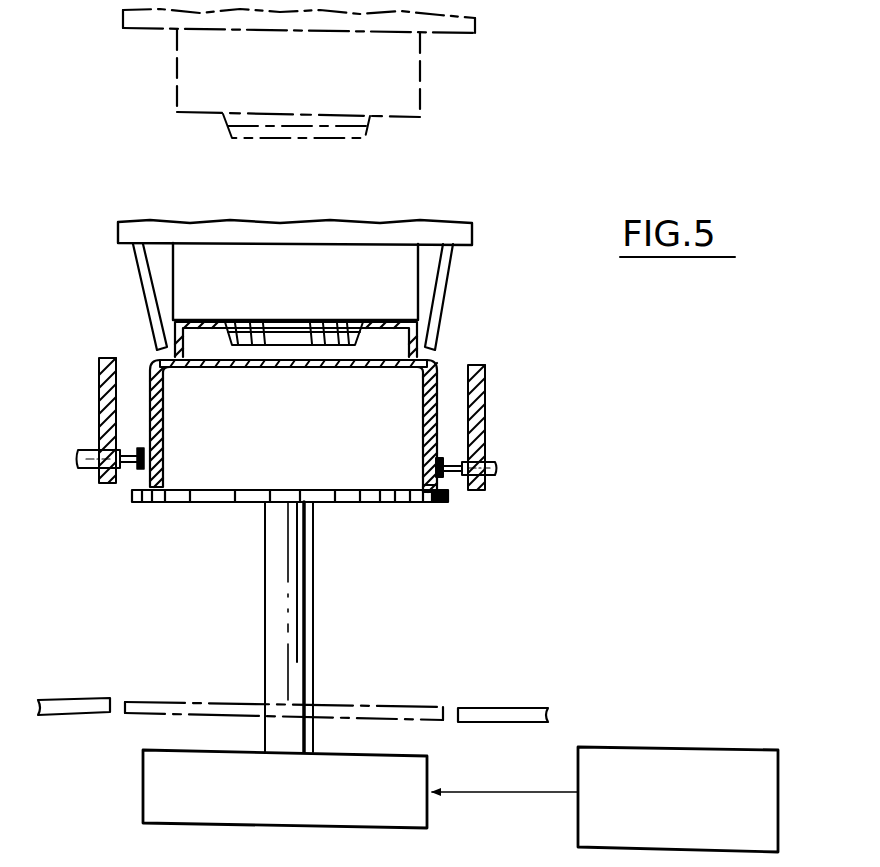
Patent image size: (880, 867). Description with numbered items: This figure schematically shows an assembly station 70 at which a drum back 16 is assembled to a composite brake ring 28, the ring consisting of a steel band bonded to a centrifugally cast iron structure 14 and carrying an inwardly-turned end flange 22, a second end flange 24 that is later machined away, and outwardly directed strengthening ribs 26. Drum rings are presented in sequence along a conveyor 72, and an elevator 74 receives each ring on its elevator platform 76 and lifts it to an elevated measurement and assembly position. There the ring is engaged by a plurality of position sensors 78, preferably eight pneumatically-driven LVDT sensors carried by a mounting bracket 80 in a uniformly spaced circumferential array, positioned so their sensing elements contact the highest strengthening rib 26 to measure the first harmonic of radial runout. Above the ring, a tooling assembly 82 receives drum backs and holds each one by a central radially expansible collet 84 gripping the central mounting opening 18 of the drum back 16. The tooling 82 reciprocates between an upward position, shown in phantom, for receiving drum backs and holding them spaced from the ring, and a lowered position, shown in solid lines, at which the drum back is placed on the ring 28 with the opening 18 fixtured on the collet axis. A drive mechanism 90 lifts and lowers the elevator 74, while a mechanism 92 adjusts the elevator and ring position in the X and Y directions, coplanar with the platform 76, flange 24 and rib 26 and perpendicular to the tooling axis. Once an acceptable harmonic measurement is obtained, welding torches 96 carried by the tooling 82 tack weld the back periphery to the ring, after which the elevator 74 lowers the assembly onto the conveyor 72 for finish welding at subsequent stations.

The cast iron structure 14 is at (163, 443).
The drum back 16 is at (428, 326).
The central mounting opening 18 is at (352, 320).
The inwardly-turned end flange 22 is at (171, 366).
The second inwardly-turned end flange 24 is at (418, 490).
The strengthening ribs 26 is at (140, 468).
The composite brake ring 28 is at (439, 415).
The assembly station 70 is at (612, 372).
The conveyor 72 is at (512, 705).
The elevator 74 is at (320, 577).
The elevator platform 76 is at (228, 494).
The position sensors 78 is at (88, 450).
The mounting bracket 80 is at (485, 368).
The tooling assembly 82 is at (420, 100).
The radially expansible collet 84 is at (355, 128).
The drive mechanism 90 is at (143, 795).
The position adjusting mechanism 92 is at (778, 780).
The welding torches 96 is at (140, 276).